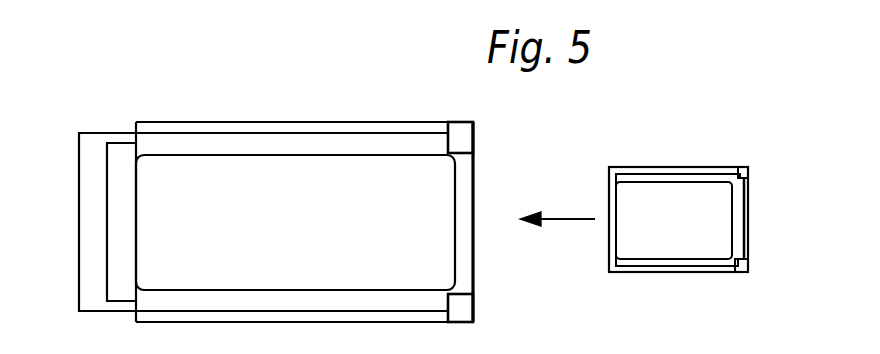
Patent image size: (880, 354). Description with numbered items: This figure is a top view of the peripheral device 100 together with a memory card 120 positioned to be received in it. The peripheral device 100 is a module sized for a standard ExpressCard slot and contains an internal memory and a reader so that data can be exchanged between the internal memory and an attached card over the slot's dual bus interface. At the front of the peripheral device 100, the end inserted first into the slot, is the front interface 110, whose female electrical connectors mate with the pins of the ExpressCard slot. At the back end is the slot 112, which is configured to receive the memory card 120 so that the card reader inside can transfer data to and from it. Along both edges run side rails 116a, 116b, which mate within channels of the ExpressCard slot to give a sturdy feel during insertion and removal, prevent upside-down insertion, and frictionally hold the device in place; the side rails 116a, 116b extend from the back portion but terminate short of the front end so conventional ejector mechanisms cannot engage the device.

The peripheral device 100 is at (406, 98).
The front interface 110 is at (87, 158).
The slot 112 is at (474, 166).
The side rail 116a is at (300, 322).
The side rail 116b is at (283, 127).
The memory card 120 is at (690, 167).